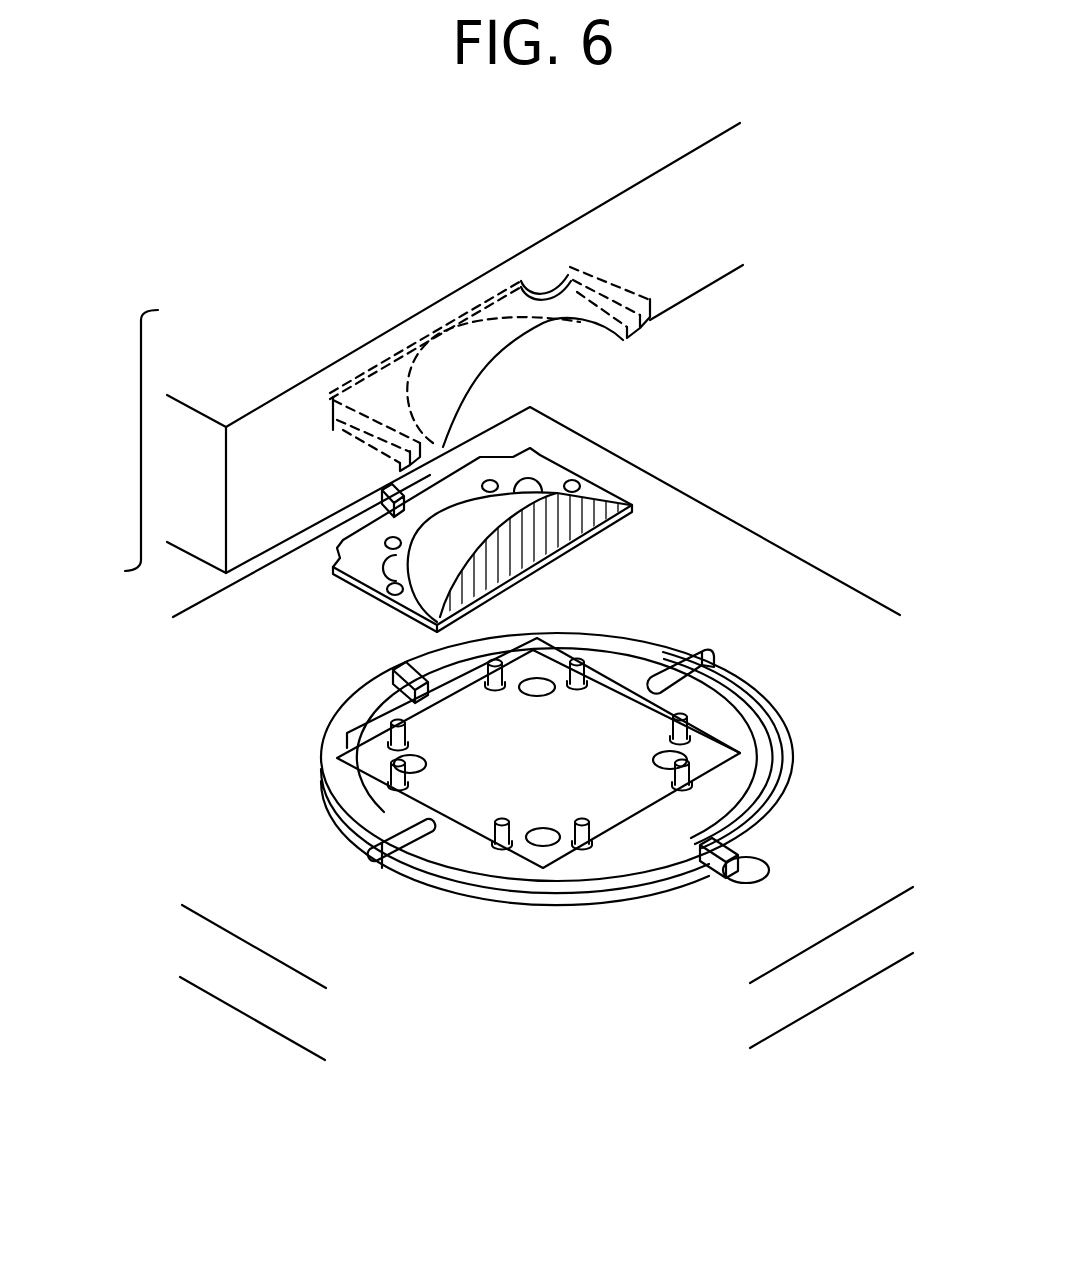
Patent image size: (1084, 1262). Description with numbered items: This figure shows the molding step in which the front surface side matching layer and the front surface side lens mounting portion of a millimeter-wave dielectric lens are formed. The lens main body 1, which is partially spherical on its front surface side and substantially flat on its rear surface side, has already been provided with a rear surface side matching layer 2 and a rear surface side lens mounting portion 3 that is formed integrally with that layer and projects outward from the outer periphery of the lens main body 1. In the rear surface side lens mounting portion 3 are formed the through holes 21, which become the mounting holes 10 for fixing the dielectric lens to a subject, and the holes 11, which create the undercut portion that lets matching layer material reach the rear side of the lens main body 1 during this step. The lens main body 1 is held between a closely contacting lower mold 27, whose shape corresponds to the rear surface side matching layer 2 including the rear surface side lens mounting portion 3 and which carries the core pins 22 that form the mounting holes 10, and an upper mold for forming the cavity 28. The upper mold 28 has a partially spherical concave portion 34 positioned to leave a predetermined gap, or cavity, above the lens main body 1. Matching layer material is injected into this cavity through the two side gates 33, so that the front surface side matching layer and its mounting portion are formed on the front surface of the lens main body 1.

The lens main body 1 is at (500, 534).
The rear surface side matching layer 2 is at (552, 560).
The rear surface side lens mounting portion 3 is at (368, 566).
The mounting holes 10 is at (500, 543).
The holes 11 is at (532, 478).
The through holes 21 is at (582, 481).
The core pins 22 is at (580, 665).
The lower mold 27 is at (258, 994).
The upper mold for forming the cavity 28 is at (655, 270).
The side gates 33 is at (355, 410).
The partially spherical concave portion 34 is at (520, 365).